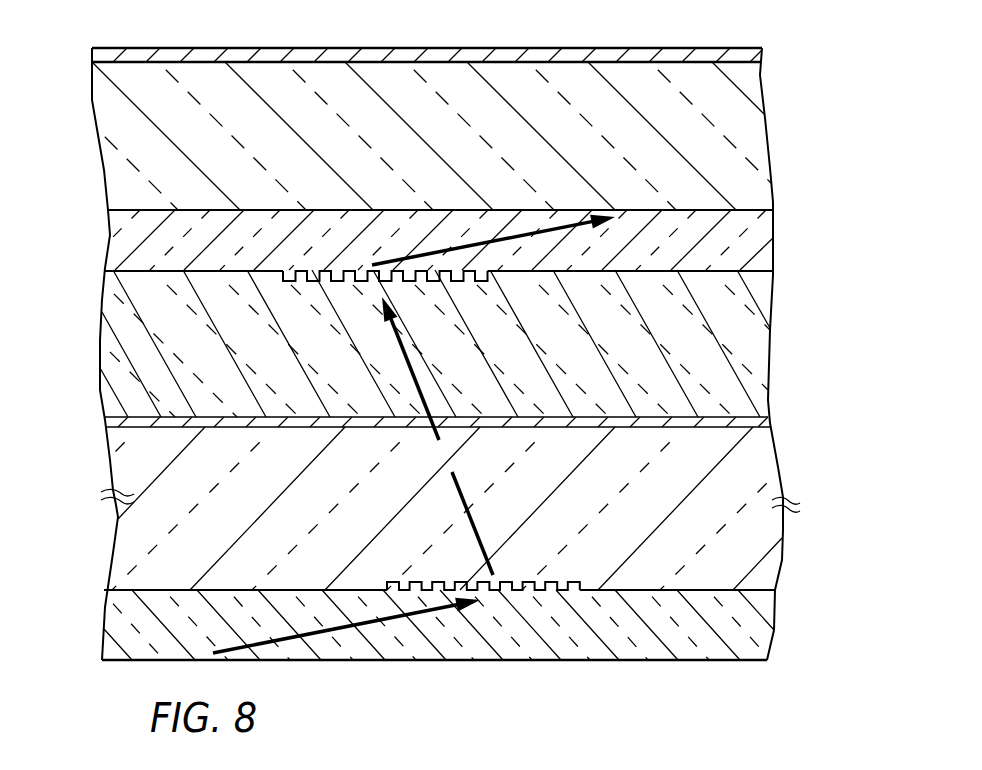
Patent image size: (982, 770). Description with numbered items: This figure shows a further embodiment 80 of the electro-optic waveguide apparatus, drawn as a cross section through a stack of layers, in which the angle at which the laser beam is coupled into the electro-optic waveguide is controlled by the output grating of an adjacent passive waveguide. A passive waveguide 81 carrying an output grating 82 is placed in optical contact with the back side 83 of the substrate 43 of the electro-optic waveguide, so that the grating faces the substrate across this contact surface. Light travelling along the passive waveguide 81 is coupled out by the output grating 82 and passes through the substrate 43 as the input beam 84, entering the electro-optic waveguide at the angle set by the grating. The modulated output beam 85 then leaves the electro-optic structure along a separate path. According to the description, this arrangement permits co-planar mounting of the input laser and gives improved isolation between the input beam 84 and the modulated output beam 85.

The embodiment 80 is at (85, 263).
The substrate 43 is at (758, 473).
The passive waveguide 81 is at (430, 645).
The output grating 82 is at (552, 590).
The back side 83 is at (325, 588).
The input beam 84 is at (425, 383).
The modulated output beam 85 is at (538, 229).